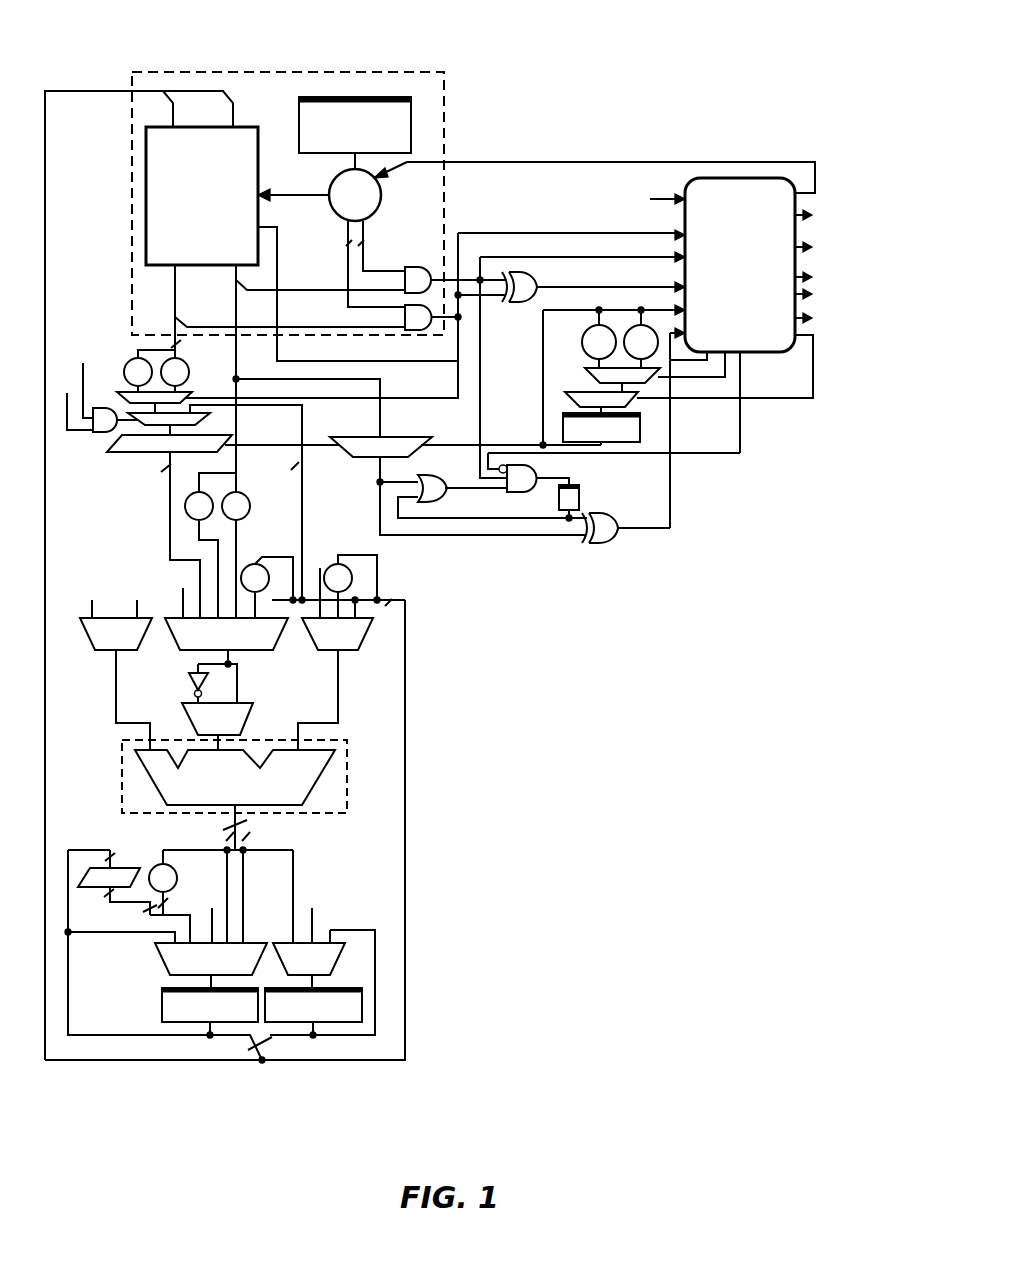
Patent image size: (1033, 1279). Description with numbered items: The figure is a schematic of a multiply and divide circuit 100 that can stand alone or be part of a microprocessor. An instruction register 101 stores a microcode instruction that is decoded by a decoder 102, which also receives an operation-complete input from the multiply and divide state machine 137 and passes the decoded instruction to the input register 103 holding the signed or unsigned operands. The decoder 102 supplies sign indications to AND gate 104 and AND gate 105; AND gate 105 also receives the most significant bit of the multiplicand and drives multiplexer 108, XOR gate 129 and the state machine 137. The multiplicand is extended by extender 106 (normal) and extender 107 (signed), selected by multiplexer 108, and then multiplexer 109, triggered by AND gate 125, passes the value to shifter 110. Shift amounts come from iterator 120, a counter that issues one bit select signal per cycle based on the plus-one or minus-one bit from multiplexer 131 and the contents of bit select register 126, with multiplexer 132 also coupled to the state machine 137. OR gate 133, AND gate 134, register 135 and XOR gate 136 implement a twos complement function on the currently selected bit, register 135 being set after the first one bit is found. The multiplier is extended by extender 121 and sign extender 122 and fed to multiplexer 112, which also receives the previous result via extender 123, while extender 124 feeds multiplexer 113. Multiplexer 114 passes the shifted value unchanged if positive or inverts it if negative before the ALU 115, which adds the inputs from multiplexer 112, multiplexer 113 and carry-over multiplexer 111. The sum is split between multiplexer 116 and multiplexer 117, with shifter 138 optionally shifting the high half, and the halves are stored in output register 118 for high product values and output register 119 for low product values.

The multiply and divide circuit 100 is at (481, 561).
The instruction register 101 is at (408, 130).
The decoder 102 is at (381, 195).
The input register 103 is at (202, 196).
The AND gate 104 is at (420, 272).
The AND gate 105 is at (400, 318).
The extender 106 is at (124, 372).
The extender 107 is at (205, 357).
The multiplexer 108 is at (118, 398).
The multiplexer 109 is at (208, 420).
The shifter 110 is at (127, 453).
The carry-over multiplexer 111 is at (84, 633).
The multiplexer 112 is at (167, 632).
The multiplexer 113 is at (362, 638).
The multiplexer 114 is at (247, 722).
The ALU 115 is at (147, 778).
The multiplexer 116 is at (252, 942).
The multiplexer 117 is at (332, 942).
The output register 118 is at (188, 1022).
The output register 119 is at (335, 1022).
The iterator 120 is at (372, 435).
The extender 121 is at (208, 496).
The sign extender 122 is at (250, 506).
The extender 123 is at (265, 588).
The extender 124 is at (348, 570).
The AND gate 125 is at (110, 432).
The bit select register 126 is at (640, 425).
The XOR gate 129 is at (535, 280).
The multiplexer 131 is at (583, 376).
The multiplexer 132 is at (570, 398).
The OR gate 133 is at (440, 497).
The AND gate 134 is at (536, 470).
The register 135 is at (579, 497).
The XOR gate 136 is at (605, 535).
The multiply and divide state machine 137 is at (740, 178).
The shifter 138 is at (83, 880).